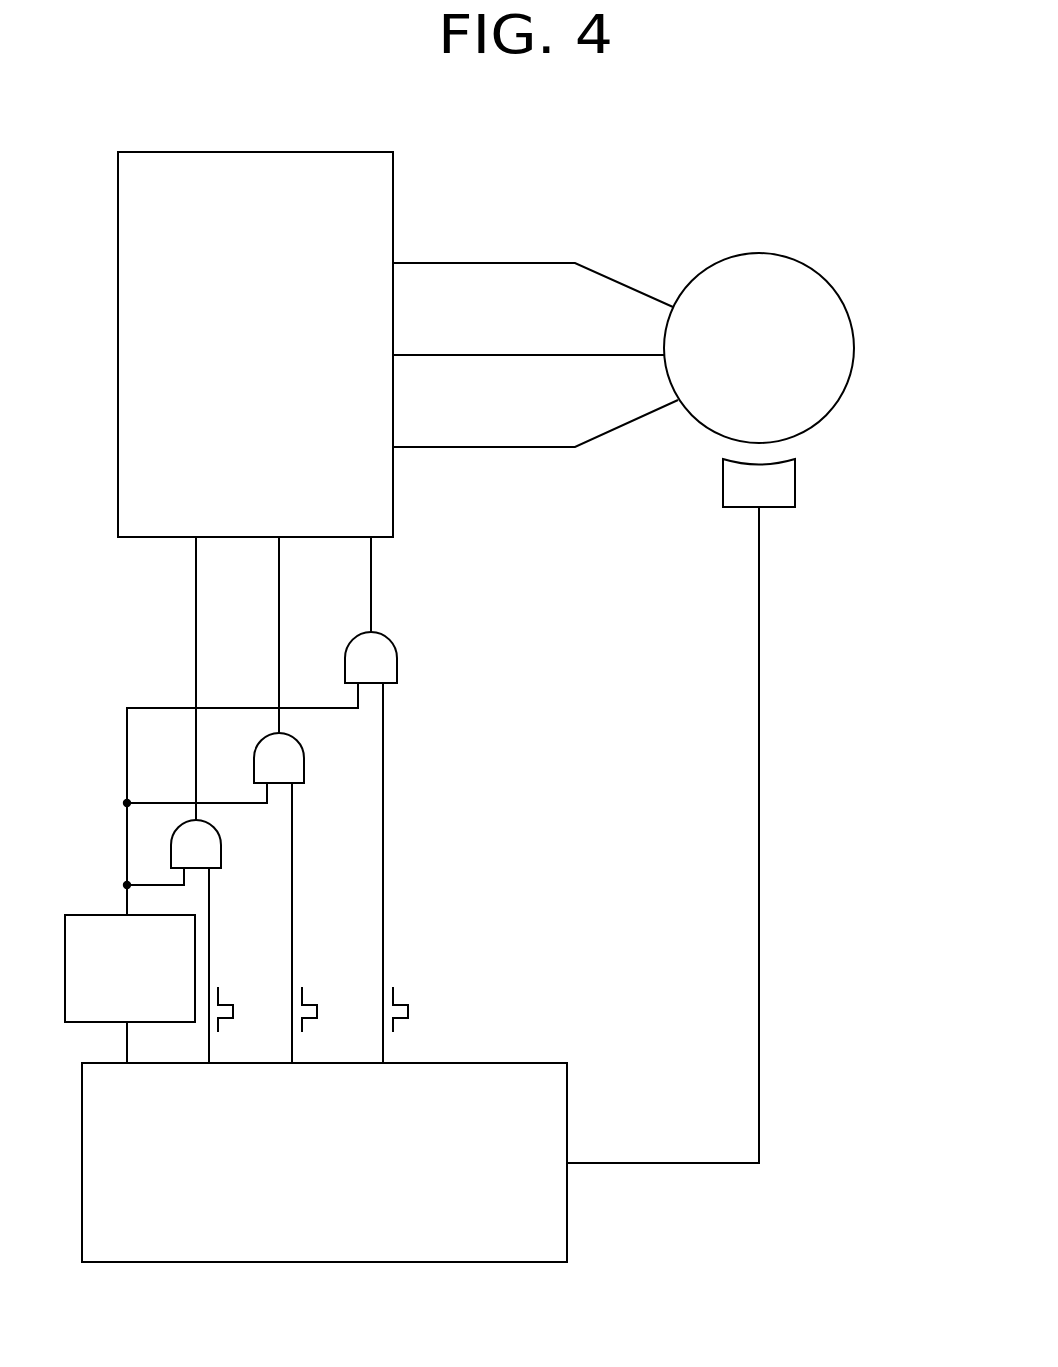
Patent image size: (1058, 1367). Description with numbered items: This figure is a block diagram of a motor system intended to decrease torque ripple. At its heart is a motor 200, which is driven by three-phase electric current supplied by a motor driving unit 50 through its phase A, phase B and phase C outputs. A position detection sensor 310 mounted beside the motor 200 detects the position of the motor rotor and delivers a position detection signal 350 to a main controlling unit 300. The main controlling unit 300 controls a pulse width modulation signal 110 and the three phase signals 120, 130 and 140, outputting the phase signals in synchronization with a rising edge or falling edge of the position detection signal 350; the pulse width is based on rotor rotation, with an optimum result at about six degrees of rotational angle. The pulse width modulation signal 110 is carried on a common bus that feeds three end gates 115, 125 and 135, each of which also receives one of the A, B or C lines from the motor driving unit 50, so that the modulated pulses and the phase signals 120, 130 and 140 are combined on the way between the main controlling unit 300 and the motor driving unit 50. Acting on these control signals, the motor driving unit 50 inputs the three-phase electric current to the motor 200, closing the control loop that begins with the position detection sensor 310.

The motor driving unit 50 is at (322, 152).
The motor 200 is at (780, 253).
The position detection sensor 310 is at (723, 507).
The position detection signal 350 is at (662, 1163).
The main controlling unit 300 is at (507, 1063).
The pulse width modulation signal 110 is at (127, 835).
The end gate 115 is at (221, 853).
The end gate 125 is at (304, 757).
The end gate 135 is at (397, 645).
The three phase signal 120 is at (209, 945).
The three phase signal 130 is at (292, 1030).
The three phase signal 140 is at (383, 1012).